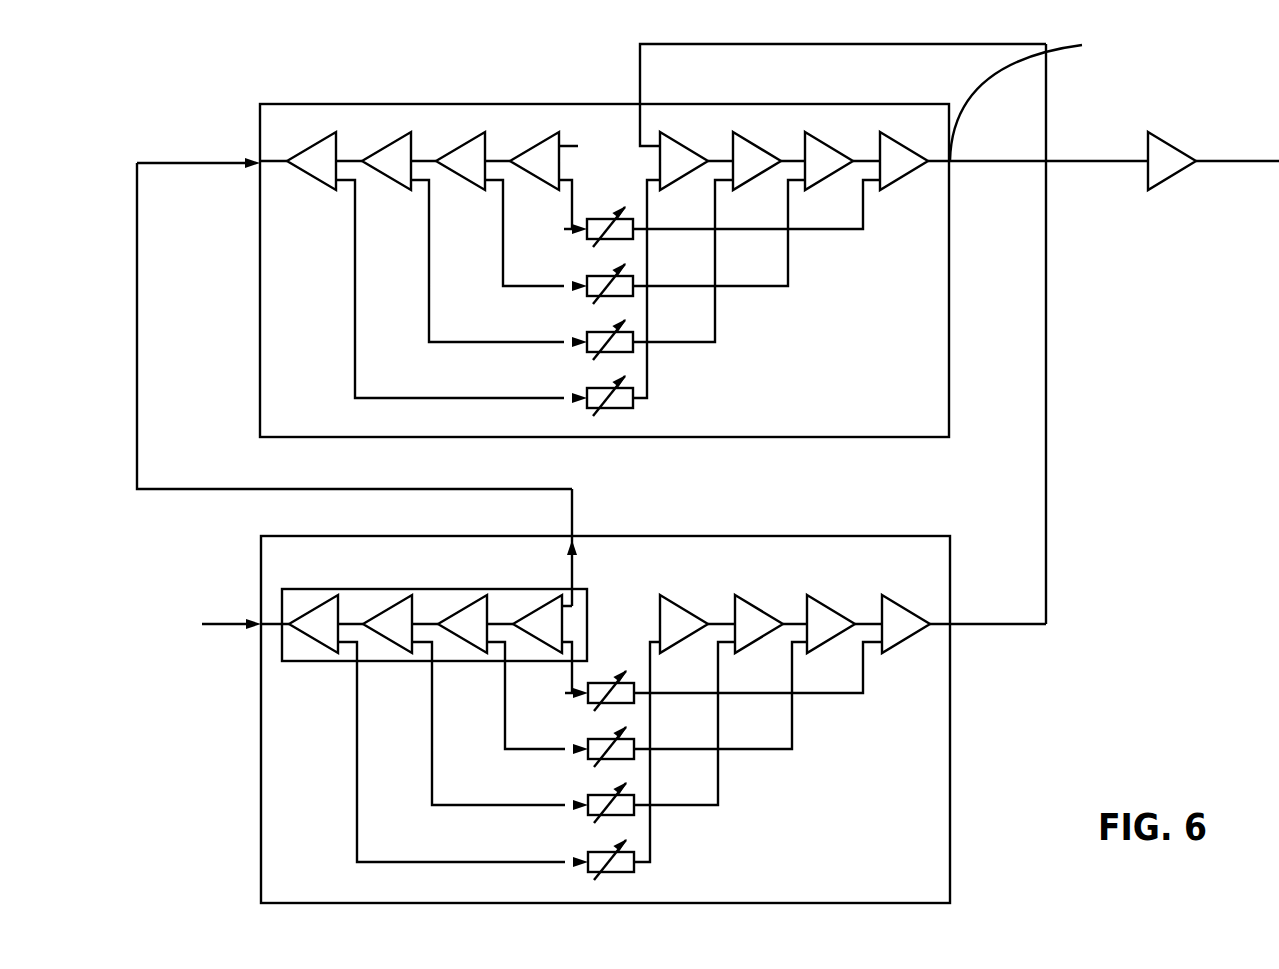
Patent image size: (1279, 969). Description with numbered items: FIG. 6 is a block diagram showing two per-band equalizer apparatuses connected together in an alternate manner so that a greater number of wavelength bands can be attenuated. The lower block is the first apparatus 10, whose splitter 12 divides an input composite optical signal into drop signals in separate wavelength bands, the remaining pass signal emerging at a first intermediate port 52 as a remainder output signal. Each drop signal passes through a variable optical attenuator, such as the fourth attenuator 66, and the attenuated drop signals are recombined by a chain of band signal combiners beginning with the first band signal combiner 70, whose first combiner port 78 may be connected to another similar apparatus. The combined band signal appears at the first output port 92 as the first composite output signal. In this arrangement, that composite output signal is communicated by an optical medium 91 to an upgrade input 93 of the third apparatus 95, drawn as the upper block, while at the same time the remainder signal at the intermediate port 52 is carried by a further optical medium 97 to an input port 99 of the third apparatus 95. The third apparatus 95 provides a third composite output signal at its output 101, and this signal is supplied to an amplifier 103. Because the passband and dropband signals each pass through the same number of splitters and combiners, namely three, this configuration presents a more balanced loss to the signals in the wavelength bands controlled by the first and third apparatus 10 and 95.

The apparatus 10 is at (944, 530).
The splitter 12 is at (375, 589).
The first intermediate port 52 is at (573, 537).
The fourth attenuator 66 is at (594, 680).
The first band signal combiner 70 is at (792, 600).
The first combiner port 78 is at (661, 598).
The optical medium 91 is at (1046, 347).
The first output port 92 is at (955, 622).
The upgrade input 93 is at (640, 100).
The third apparatus 95 is at (708, 101).
The further optical medium 97 is at (157, 489).
The input port 99 is at (258, 160).
The output 101 is at (1033, 98).
The amplifier 103 is at (1170, 133).